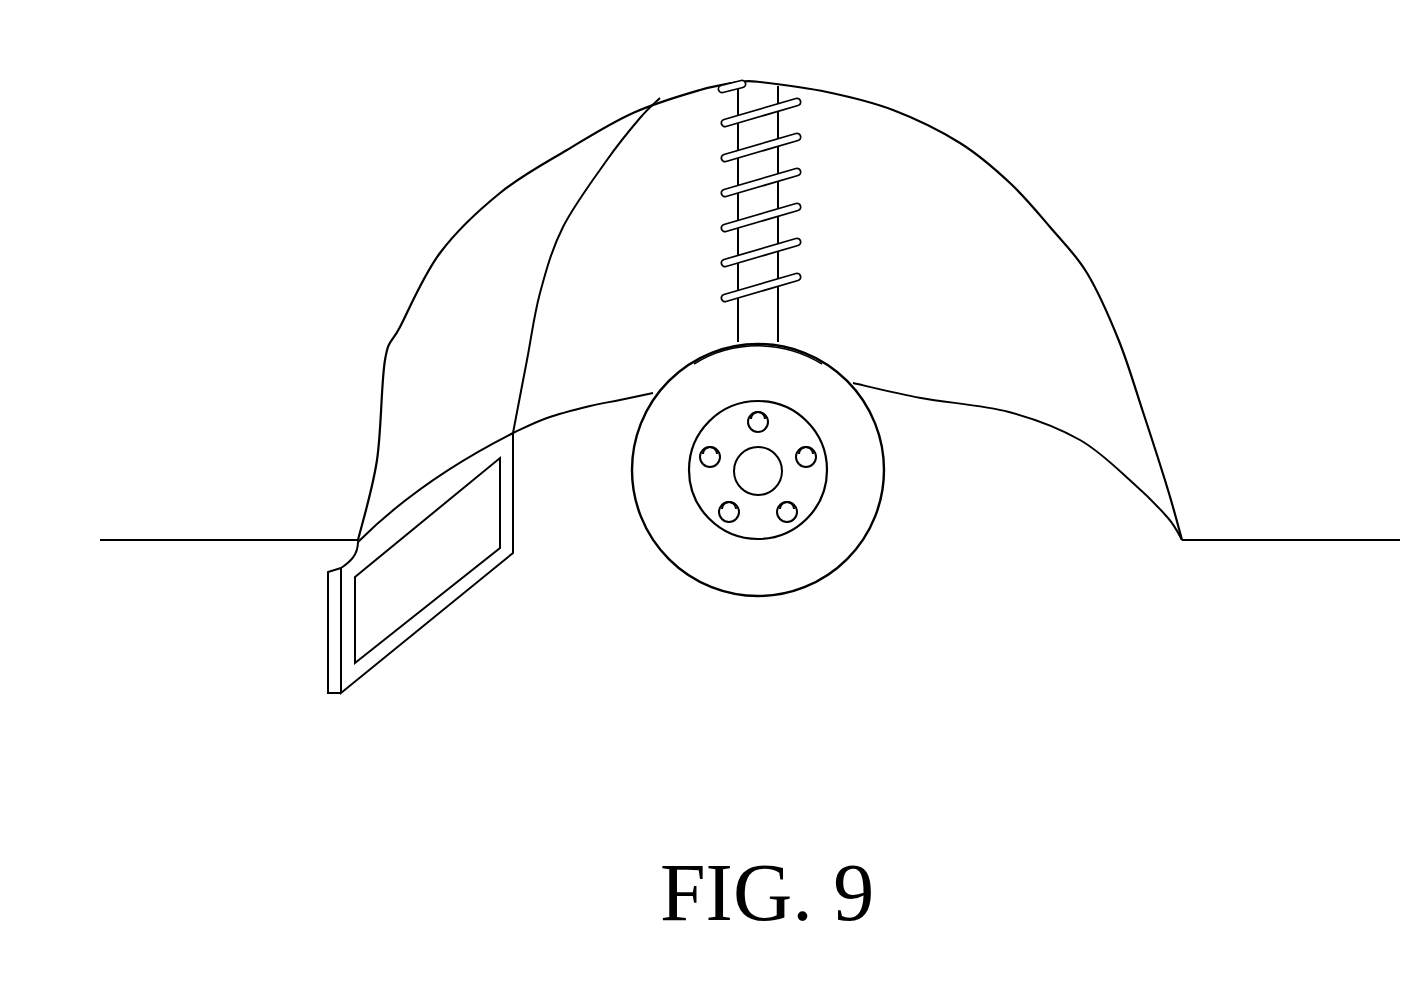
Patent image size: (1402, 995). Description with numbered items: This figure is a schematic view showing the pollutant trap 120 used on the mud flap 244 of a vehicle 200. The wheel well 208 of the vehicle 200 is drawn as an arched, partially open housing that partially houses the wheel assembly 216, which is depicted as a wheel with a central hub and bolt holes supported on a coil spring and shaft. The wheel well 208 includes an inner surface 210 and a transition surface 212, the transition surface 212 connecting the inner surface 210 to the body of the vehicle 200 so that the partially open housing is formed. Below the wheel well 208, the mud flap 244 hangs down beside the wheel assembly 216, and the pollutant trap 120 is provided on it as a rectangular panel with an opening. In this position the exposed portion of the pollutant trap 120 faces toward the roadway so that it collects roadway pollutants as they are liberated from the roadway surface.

The pollutant trap 120 is at (408, 590).
The vehicle 200 is at (1253, 544).
The wheel well 208 is at (1085, 265).
The inner surface 210 is at (1051, 348).
The transition surface 212 is at (433, 392).
The wheel assembly 216 is at (702, 555).
The mud flap 244 is at (333, 697).